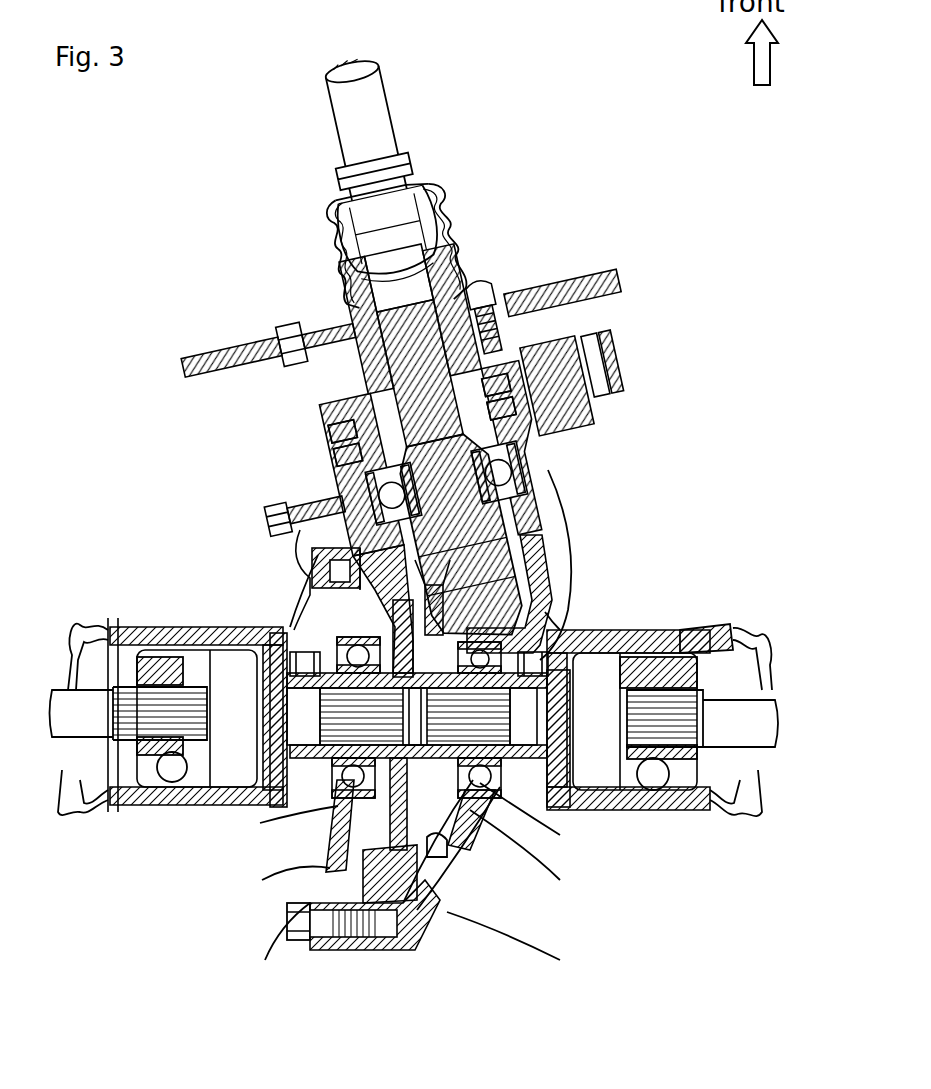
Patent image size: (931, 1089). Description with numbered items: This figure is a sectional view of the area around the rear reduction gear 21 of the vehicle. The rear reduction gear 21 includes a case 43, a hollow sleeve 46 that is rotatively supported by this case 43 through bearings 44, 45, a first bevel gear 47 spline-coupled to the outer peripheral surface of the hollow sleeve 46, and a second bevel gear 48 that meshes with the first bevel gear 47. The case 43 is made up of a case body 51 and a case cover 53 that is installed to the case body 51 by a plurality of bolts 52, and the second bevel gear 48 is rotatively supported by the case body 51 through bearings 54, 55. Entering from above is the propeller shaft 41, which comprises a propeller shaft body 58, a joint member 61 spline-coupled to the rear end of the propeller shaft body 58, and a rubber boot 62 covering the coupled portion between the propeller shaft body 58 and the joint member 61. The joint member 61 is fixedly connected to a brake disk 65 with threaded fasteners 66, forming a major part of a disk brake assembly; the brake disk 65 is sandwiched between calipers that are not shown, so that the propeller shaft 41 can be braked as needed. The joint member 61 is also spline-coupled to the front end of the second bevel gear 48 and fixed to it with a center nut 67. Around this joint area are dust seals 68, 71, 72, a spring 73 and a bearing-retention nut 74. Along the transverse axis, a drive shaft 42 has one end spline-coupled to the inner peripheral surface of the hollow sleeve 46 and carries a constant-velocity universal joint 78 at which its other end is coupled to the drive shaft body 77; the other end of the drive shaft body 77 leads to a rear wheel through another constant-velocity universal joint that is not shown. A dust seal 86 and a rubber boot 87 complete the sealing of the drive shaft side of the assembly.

The rear reduction gear 21 is at (482, 880).
The propeller shaft 41 is at (398, 83).
The drive shaft 42 is at (68, 686).
The case 43 is at (487, 848).
The bearing 44 is at (330, 800).
The bearing 45 is at (500, 812).
The hollow sleeve 46 is at (290, 800).
The first bevel gear 47 is at (320, 880).
The second bevel gear 48 is at (550, 537).
The case body 51 is at (420, 912).
The bolts 52 is at (298, 925).
The case cover 53 is at (315, 945).
The bearing 54 is at (548, 605).
The bearing 55 is at (537, 457).
The propeller shaft body 58 is at (332, 118).
The joint member 61 is at (338, 300).
The rubber boot 62 is at (437, 232).
The brake disk 65 is at (188, 350).
The threaded fasteners 66 is at (492, 283).
The center nut 67 is at (363, 390).
The dust seal 68 is at (432, 212).
The dust seal 71 is at (323, 413).
The dust seal 72 is at (330, 437).
The spring 73 is at (483, 350).
The bearing-retention nut 74 is at (513, 413).
The drive shaft body 77 is at (82, 812).
The constant-velocity universal joint 78 is at (170, 620).
The dust seal 86 is at (300, 638).
The rubber boot 87 is at (120, 815).